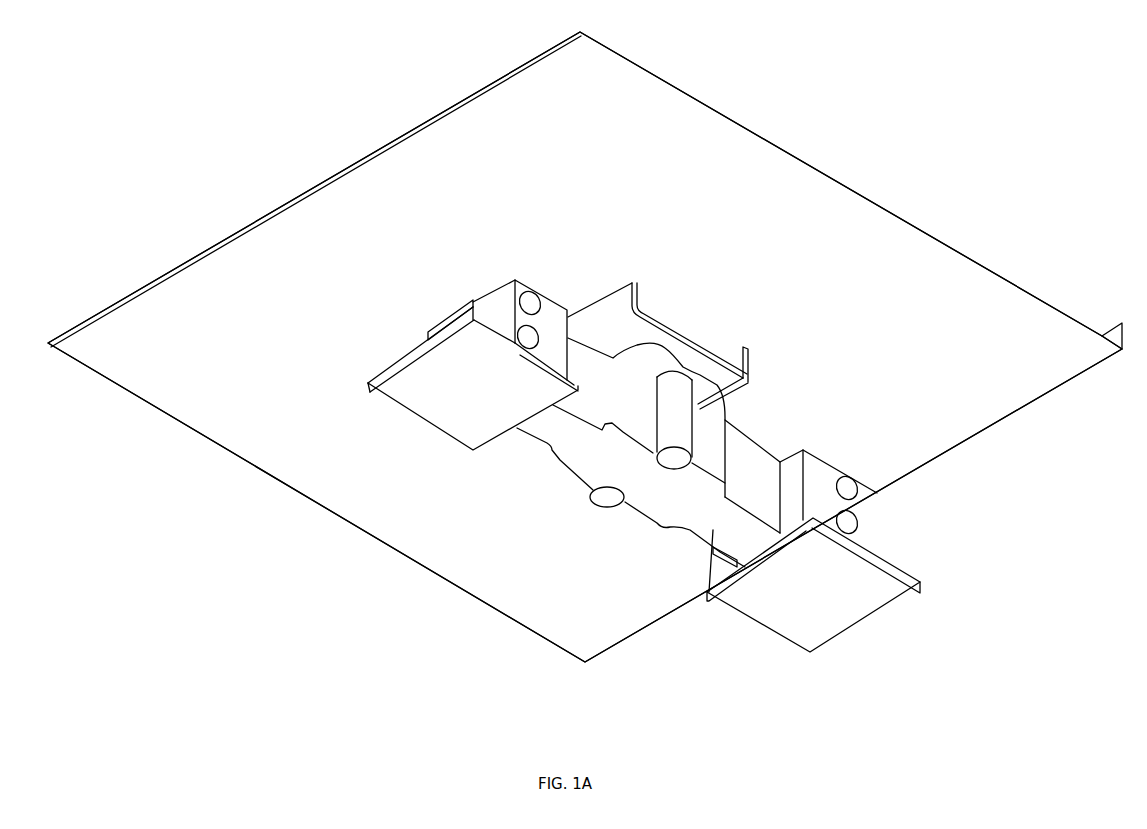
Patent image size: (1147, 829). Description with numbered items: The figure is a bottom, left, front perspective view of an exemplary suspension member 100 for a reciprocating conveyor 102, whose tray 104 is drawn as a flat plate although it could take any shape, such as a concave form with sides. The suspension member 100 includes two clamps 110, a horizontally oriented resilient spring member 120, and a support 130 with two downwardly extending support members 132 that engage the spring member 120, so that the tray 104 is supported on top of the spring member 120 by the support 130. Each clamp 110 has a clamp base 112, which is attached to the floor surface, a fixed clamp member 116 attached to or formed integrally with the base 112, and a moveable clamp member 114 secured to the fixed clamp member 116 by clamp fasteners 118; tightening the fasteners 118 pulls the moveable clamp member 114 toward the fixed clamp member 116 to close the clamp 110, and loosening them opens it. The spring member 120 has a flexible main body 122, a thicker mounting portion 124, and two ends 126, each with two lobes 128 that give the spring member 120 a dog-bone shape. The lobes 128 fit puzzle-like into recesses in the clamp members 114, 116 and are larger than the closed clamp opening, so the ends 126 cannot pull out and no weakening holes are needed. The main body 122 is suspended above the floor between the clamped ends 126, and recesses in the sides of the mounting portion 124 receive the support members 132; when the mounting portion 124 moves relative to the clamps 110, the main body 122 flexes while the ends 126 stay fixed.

The suspension member 100 is at (440, 522).
The reciprocating conveyor 102 is at (924, 109).
The tray 104 is at (320, 228).
The clamp 110 is at (676, 463).
The clamp base 112 is at (447, 405).
The moveable clamp member 114 is at (553, 312).
The fixed clamp member 116 is at (440, 322).
The clamp fastener 118 is at (519, 299).
The horizontally oriented resilient spring member 120 is at (560, 480).
The flexible main body 122 is at (553, 427).
The mounting portion 124 is at (648, 487).
The end 126 is at (586, 404).
The lobe 128 is at (690, 480).
The support 130 is at (685, 360).
The support member 132 is at (575, 540).